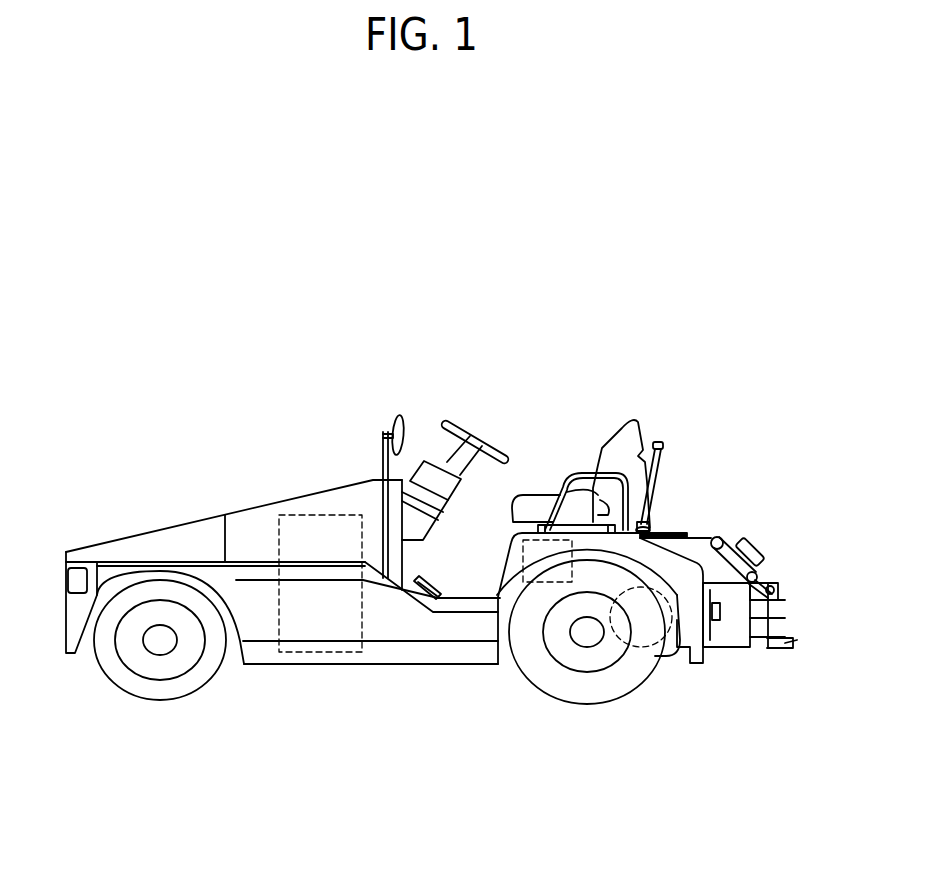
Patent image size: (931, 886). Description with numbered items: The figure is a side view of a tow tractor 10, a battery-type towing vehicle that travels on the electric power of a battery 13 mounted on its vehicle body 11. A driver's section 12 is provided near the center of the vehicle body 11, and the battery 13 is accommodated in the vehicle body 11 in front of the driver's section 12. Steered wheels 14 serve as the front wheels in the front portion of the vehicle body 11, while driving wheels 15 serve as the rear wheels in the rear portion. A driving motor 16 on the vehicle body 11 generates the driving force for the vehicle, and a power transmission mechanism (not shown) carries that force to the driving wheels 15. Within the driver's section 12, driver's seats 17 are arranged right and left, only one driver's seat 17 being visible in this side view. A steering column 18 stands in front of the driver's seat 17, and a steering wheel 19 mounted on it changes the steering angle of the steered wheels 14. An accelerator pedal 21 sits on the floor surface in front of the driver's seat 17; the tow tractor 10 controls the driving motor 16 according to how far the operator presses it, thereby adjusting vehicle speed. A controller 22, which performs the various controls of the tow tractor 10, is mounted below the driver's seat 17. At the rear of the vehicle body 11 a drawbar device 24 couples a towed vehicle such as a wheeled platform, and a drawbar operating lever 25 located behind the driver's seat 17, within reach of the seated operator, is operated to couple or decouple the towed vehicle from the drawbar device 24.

The tow tractor 10 is at (620, 336).
The vehicle body 11 is at (418, 667).
The driver's section 12 is at (530, 412).
The battery 13 is at (277, 538).
The steered wheels 14 is at (110, 685).
The driving wheels 15 is at (530, 683).
The driving motor 16 is at (640, 662).
The driver's seat 17 is at (612, 443).
The steering column 18 is at (417, 463).
The steering wheel 19 is at (462, 422).
The accelerator pedal 21 is at (433, 585).
The controller 22 is at (521, 560).
The drawbar device 24 is at (775, 547).
The drawbar operating lever 25 is at (663, 443).